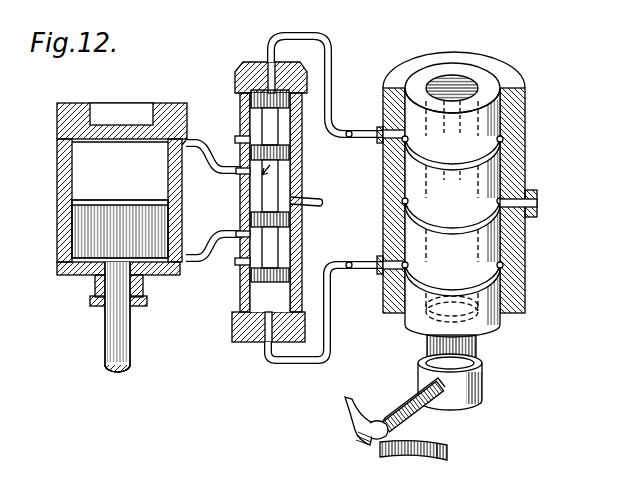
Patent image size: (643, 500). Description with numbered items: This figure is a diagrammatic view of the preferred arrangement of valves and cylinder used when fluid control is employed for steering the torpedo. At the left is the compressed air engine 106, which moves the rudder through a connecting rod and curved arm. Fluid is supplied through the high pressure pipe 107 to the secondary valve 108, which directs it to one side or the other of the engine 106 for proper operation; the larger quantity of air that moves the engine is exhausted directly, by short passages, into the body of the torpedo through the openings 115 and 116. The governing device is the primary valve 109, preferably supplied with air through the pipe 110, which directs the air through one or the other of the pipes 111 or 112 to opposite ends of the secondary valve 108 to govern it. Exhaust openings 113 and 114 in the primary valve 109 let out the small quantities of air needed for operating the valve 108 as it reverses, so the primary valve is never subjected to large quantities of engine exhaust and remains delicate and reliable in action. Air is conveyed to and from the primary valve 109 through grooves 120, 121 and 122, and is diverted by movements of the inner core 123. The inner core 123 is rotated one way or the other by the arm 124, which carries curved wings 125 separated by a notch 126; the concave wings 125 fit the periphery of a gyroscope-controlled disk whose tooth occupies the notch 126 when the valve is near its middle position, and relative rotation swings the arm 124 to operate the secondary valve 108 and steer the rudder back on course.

The compressed air engine 106 is at (122, 237).
The high pressure pipe 107 is at (321, 204).
The secondary valve 108 is at (286, 186).
The primary valve 109 is at (512, 140).
The pipe 110 is at (529, 198).
The pipe 111 is at (331, 73).
The pipe 112 is at (328, 356).
The exhaust opening 113 is at (443, 99).
The exhaust opening 114 is at (481, 323).
The opening 115 is at (236, 140).
The opening 116 is at (237, 262).
The groove 120 is at (516, 228).
The groove 121 is at (495, 150).
The groove 122 is at (492, 278).
The inner core 123 is at (478, 83).
The arm 124 is at (423, 419).
The curved wings 125 is at (350, 418).
The notch 126 is at (380, 438).